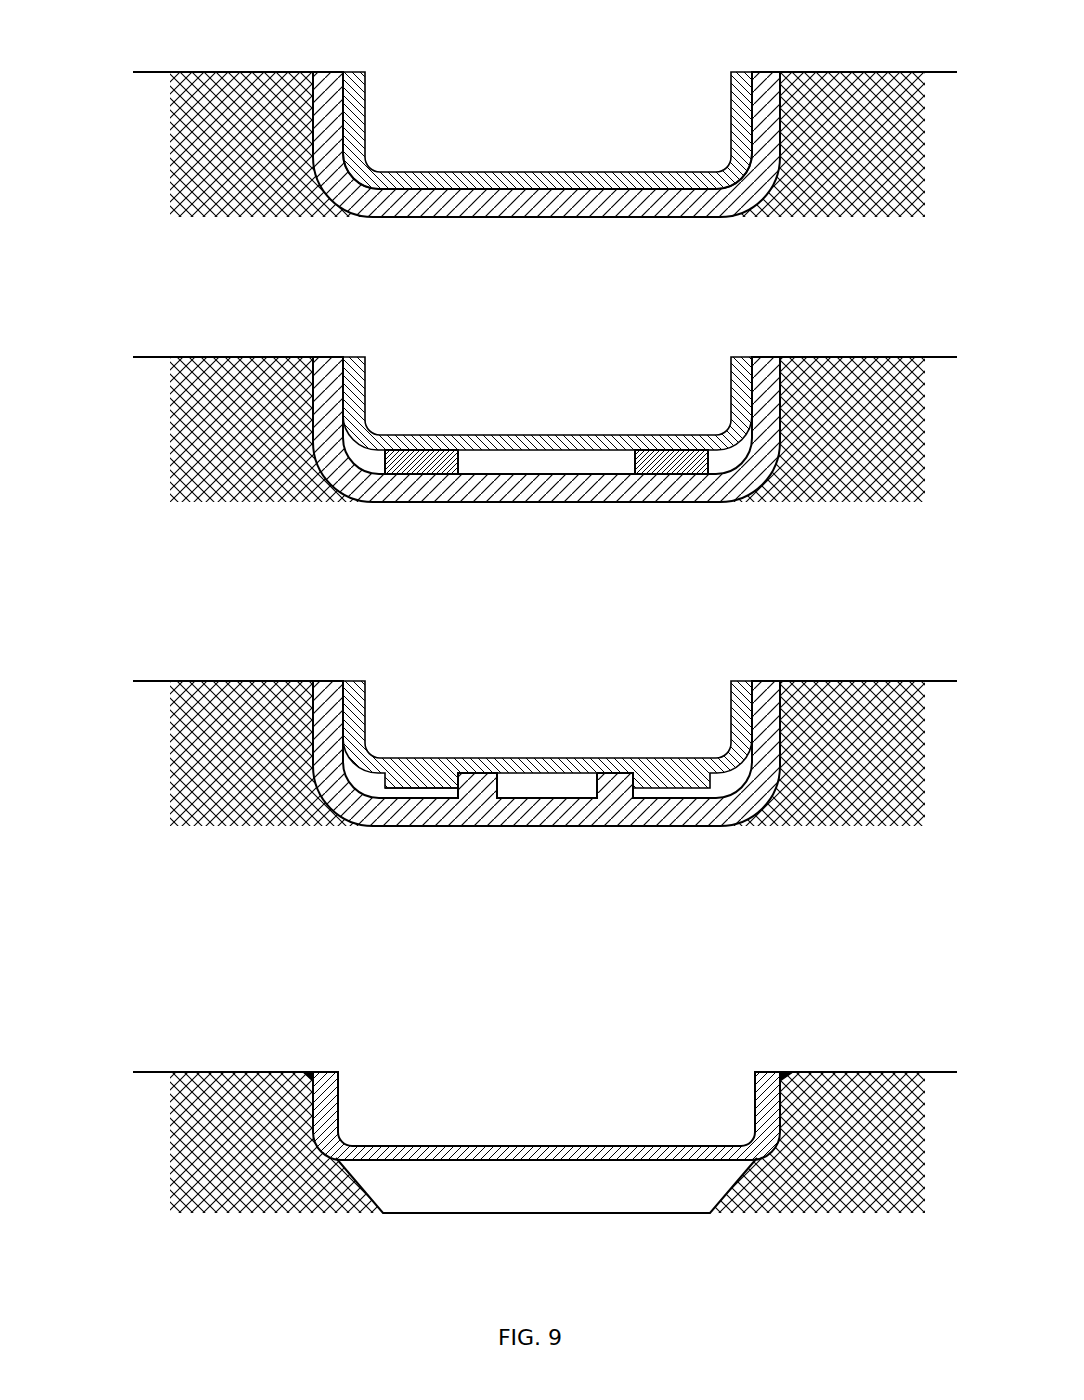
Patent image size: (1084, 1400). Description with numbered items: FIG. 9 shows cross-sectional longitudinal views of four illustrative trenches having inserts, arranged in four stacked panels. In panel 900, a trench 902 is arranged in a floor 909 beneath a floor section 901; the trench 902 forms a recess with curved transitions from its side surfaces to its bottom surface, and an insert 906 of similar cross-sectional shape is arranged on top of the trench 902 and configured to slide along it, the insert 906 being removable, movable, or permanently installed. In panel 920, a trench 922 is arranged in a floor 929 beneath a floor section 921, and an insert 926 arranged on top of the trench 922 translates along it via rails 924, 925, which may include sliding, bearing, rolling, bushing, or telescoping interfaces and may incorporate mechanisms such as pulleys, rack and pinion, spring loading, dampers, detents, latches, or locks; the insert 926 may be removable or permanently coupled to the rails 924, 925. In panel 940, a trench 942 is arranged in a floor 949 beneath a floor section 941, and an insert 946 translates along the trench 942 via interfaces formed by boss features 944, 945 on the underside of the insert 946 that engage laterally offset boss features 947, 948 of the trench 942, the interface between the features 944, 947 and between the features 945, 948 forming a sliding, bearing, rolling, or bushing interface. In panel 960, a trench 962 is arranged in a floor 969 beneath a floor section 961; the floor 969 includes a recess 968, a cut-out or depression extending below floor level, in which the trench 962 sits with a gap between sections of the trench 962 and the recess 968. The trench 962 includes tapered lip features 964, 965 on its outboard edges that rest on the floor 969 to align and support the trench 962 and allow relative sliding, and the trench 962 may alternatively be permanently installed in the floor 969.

The panel 900 is at (42, 139).
The floor section 901 is at (223, 139).
The trench 902 is at (768, 72).
The insert 906 is at (734, 72).
The floor 909 is at (818, 72).
The panel 920 is at (42, 424).
The floor section 921 is at (223, 443).
The trench 922 is at (768, 357).
The rail 924 is at (420, 448).
The rail 925 is at (691, 504).
The insert 926 is at (735, 357).
The floor 929 is at (818, 357).
The panel 940 is at (42, 746).
The floor section 941 is at (223, 763).
The trench 942 is at (768, 681).
The feature 944 is at (424, 792).
The feature 945 is at (673, 800).
The insert 946 is at (735, 681).
The feature 947 is at (478, 790).
The feature 948 is at (612, 790).
The floor 949 is at (818, 681).
The panel 960 is at (42, 1136).
The floor section 961 is at (223, 1153).
The trench 962 is at (757, 1070).
The feature 964 is at (782, 1069).
The feature 965 is at (306, 1069).
The recess 968 is at (543, 1194).
The floor 969 is at (818, 1072).